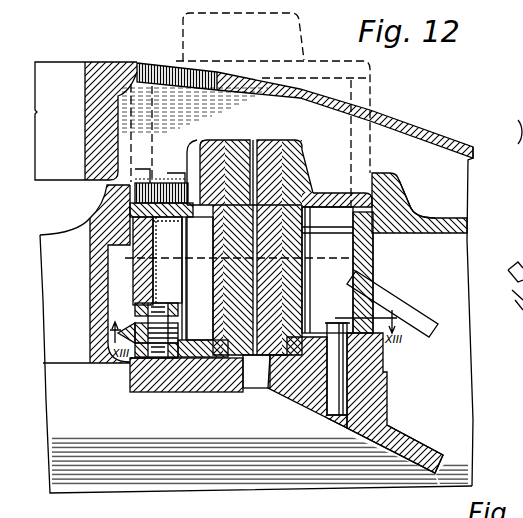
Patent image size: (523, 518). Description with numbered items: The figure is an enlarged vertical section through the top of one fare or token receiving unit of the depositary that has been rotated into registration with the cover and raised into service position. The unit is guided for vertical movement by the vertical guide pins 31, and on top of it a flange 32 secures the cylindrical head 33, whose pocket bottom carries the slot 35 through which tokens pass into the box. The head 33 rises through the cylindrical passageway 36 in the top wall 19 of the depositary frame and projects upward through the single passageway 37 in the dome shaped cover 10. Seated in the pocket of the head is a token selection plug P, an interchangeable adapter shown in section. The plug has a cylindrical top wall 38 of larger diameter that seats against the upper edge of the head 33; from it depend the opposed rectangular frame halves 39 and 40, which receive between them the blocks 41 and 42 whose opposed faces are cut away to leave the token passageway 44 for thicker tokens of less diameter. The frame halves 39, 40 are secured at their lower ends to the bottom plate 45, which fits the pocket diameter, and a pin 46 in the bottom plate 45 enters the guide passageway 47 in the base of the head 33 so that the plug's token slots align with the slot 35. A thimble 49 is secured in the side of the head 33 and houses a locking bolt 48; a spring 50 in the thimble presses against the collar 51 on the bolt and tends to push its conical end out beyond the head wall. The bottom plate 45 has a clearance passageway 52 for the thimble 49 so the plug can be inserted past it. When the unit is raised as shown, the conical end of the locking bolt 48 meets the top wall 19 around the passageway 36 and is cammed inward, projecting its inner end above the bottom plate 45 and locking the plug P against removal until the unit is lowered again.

The dome shaped cover 10 is at (455, 136).
The top wall of the depositary frame 19 is at (412, 214).
The vertical guide pins 31 is at (300, 280).
The flange 32 is at (397, 438).
The cylindrical head 33 is at (362, 282).
The slot 35 is at (260, 385).
The cylindrical passageway 36 is at (372, 171).
The passageway 37 is at (370, 115).
The cylindrical top wall 38 is at (326, 193).
The rectangular frame half 39 is at (222, 297).
The rectangular frame half 40 is at (296, 313).
The block 41 is at (240, 140).
The block 42 is at (264, 140).
The passageway 44 is at (249, 140).
The bottom plate 45 is at (277, 390).
The pin 46 is at (380, 368).
The guide passageway 47 is at (343, 422).
The locking bolt 48 is at (157, 383).
The thimble 49 is at (168, 305).
The spring 50 is at (172, 358).
The collar 51 is at (133, 357).
The clearance passageway 52 is at (512, 320).
The token selection plug P is at (312, 150).